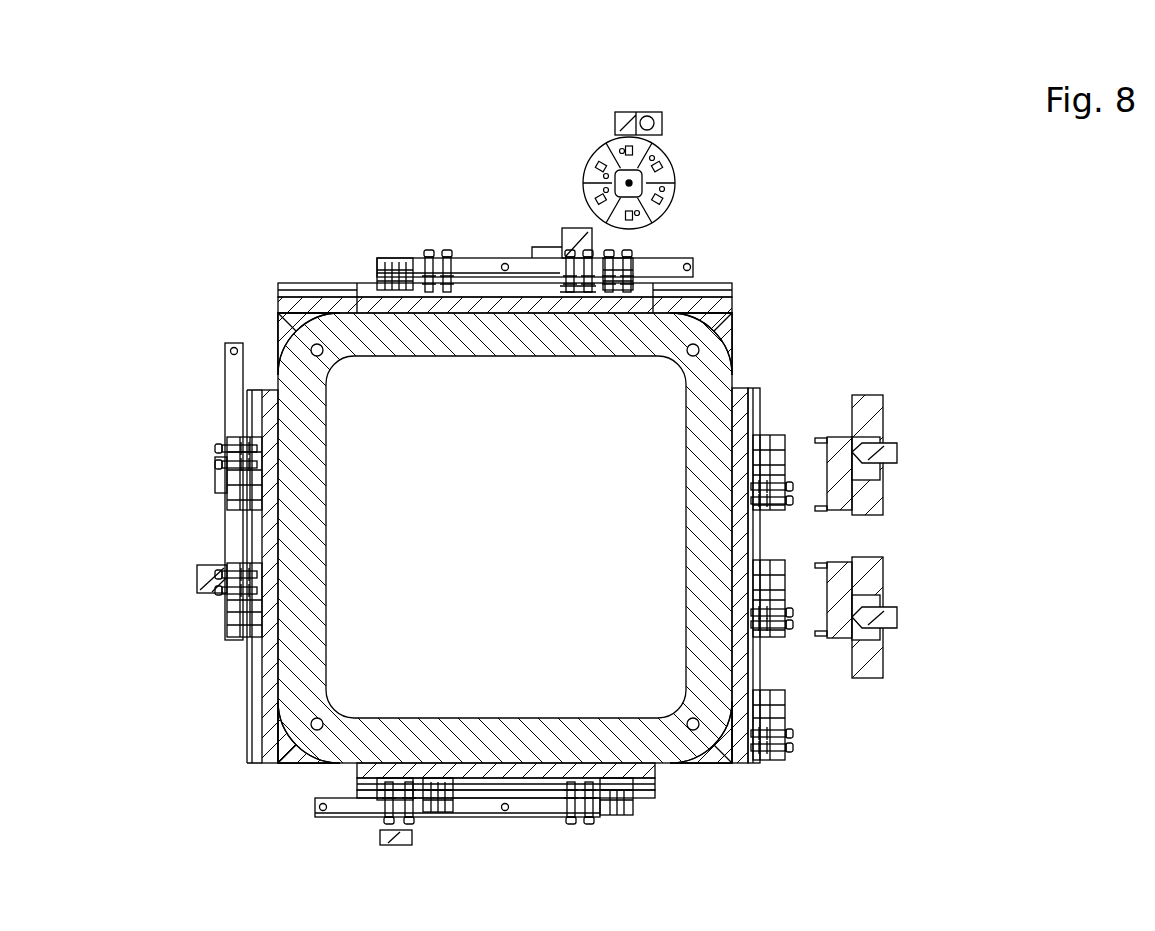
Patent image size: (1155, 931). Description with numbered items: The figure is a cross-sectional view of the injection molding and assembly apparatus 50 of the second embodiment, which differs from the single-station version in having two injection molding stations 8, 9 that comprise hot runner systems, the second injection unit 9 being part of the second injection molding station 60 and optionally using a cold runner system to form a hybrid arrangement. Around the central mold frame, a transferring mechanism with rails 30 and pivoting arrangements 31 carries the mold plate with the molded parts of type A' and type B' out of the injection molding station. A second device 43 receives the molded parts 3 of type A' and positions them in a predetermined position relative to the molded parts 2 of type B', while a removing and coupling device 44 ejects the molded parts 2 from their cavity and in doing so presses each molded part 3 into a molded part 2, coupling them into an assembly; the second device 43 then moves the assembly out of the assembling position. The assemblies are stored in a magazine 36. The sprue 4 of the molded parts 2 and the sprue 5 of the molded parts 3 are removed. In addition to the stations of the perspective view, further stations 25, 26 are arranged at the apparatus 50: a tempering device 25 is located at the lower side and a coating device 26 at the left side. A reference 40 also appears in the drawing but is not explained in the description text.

The molded part of type B' 2 is at (625, 825).
The molded part of type A' 3 is at (205, 552).
The sprue 4 is at (610, 847).
The sprue 5 is at (583, 847).
The injection molding station 8 is at (918, 628).
The second injection unit 9 is at (918, 455).
The tempering device 25 is at (380, 828).
The coating device 26 is at (222, 605).
The rails 30 is at (737, 400).
The pivoting arrangements 31 is at (740, 753).
The magazine 36 is at (693, 158).
The nozzle holder 40 is at (818, 665).
The second device 43 is at (535, 222).
The removing and coupling device 44 is at (572, 292).
The injection molding and assembly apparatus 50 is at (875, 217).
The second injection molding station 60 is at (813, 387).